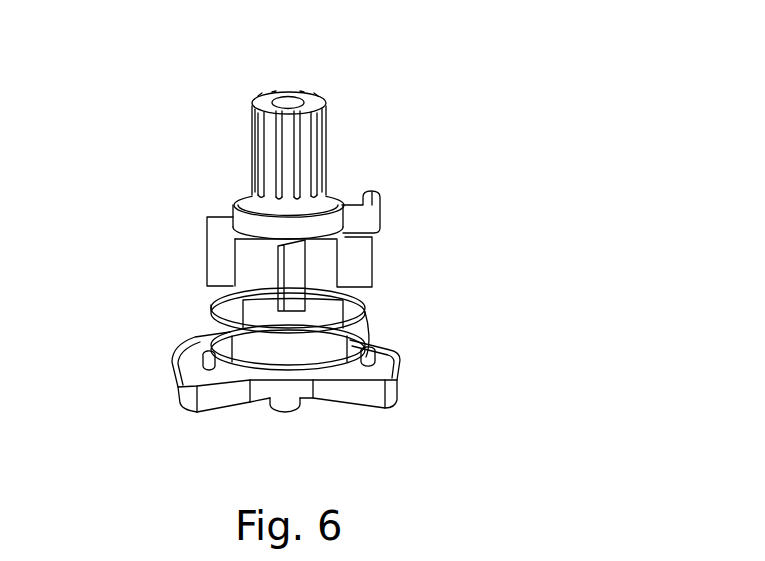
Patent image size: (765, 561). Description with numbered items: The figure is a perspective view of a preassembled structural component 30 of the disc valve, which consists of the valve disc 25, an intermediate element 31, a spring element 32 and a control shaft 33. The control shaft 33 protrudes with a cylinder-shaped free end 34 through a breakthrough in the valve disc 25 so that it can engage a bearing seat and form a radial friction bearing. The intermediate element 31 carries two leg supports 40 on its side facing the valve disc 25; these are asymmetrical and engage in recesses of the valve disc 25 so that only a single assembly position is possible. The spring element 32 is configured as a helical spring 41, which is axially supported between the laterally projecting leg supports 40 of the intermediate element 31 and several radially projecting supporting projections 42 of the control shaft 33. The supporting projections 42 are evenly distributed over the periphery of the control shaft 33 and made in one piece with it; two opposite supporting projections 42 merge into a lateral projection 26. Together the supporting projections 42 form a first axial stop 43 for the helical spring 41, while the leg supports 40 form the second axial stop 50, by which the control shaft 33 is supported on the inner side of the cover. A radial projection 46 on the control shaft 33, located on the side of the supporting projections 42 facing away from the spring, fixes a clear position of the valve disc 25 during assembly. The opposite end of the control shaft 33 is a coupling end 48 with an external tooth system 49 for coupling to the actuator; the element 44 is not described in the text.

The valve disc 25 is at (393, 393).
The lateral projection 26 is at (355, 392).
The preassembled structural component 30 is at (522, 145).
The intermediate element 31 is at (262, 360).
The spring element 32 is at (178, 298).
The control shaft 33 is at (331, 150).
The free end 34 is at (296, 406).
The leg supports 40 is at (207, 369).
The helical spring 41 is at (357, 306).
The supporting projections 42 is at (202, 230).
The first axial stop 43 is at (215, 307).
The boss 44 is at (375, 362).
The radial projection 46 is at (380, 212).
The coupling end 48 is at (322, 112).
The external tooth system 49 is at (252, 121).
The second axial stop 50 is at (217, 207).